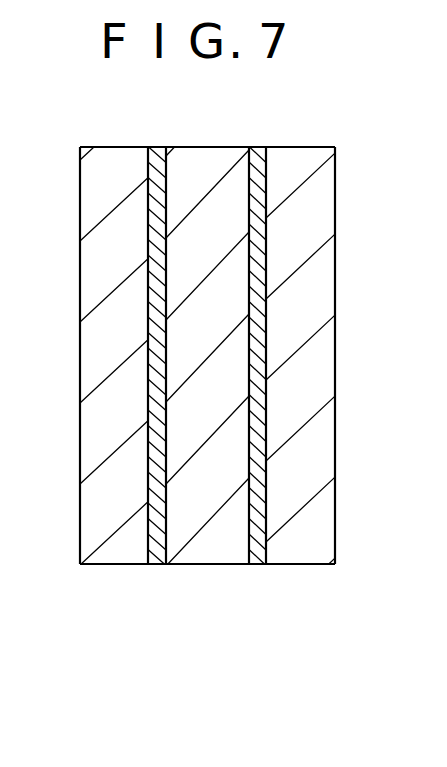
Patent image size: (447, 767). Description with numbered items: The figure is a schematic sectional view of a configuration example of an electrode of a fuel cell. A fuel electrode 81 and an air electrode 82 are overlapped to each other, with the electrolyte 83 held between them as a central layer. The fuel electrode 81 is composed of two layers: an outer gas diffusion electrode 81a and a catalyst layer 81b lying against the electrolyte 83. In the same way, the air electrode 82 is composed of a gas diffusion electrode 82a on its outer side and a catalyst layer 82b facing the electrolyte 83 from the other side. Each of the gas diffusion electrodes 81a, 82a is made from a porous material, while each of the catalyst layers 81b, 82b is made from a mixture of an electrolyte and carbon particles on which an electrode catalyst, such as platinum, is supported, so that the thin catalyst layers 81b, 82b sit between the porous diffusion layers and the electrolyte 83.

The fuel electrode 81 is at (165, 137).
The gas diffusion electrode 81a is at (84, 566).
The catalyst layer 81b is at (157, 566).
The air electrode 82 is at (335, 137).
The gas diffusion electrode 82a is at (318, 566).
The catalyst layer 82b is at (262, 566).
The electrolyte 83 is at (200, 147).